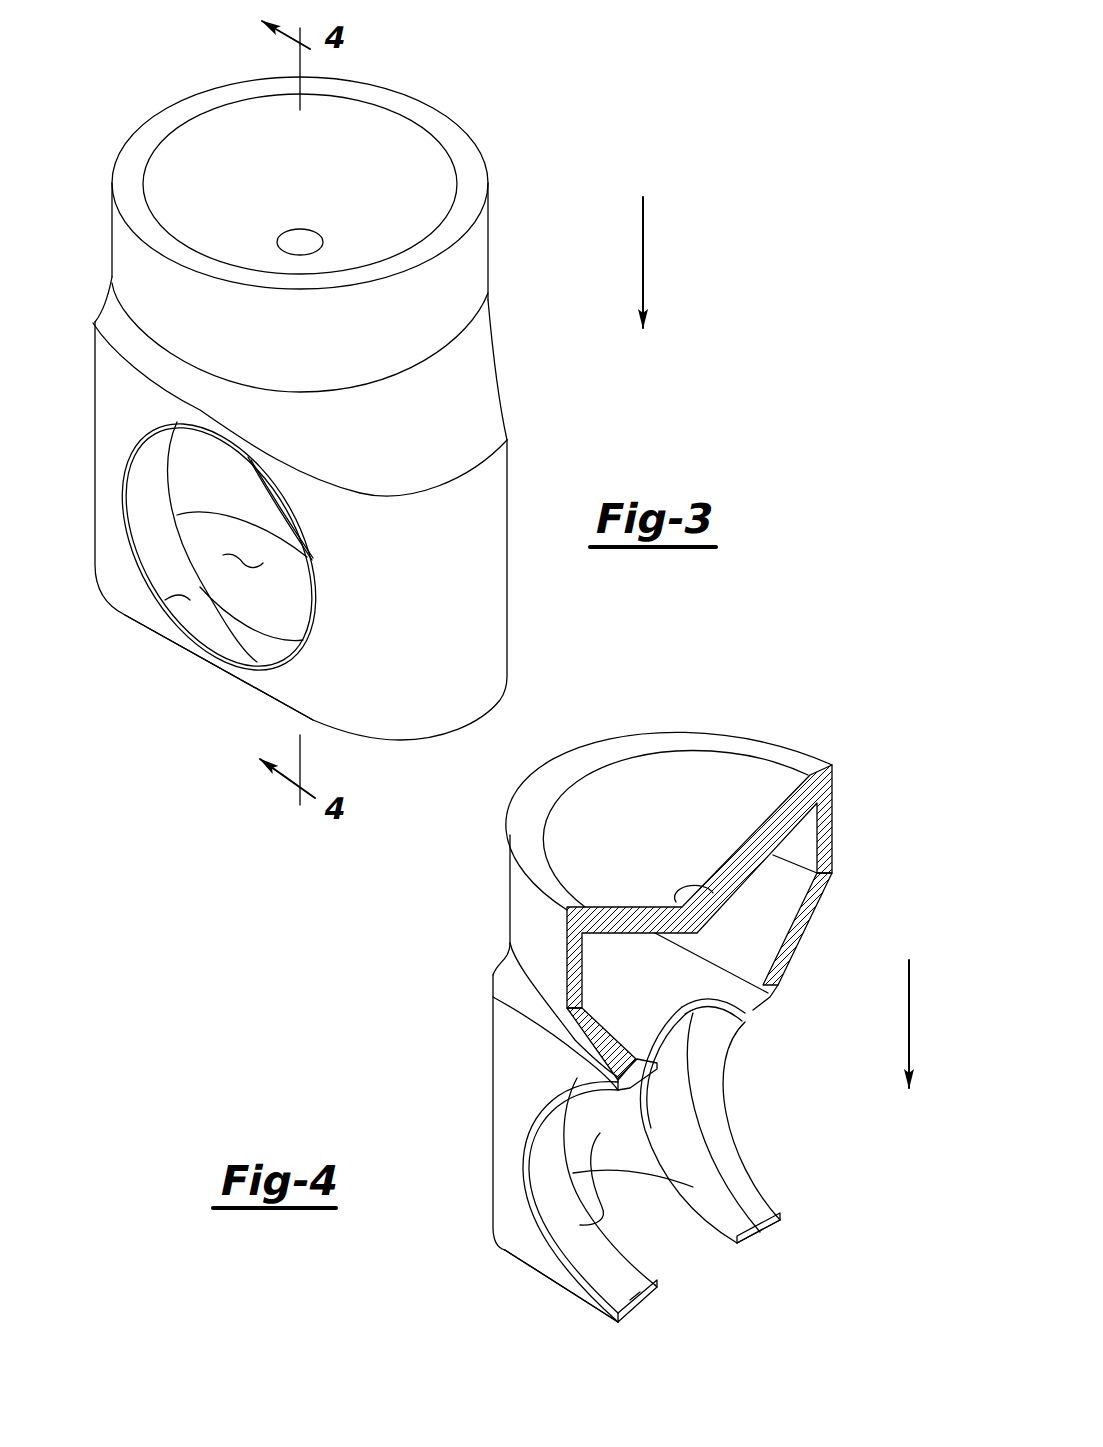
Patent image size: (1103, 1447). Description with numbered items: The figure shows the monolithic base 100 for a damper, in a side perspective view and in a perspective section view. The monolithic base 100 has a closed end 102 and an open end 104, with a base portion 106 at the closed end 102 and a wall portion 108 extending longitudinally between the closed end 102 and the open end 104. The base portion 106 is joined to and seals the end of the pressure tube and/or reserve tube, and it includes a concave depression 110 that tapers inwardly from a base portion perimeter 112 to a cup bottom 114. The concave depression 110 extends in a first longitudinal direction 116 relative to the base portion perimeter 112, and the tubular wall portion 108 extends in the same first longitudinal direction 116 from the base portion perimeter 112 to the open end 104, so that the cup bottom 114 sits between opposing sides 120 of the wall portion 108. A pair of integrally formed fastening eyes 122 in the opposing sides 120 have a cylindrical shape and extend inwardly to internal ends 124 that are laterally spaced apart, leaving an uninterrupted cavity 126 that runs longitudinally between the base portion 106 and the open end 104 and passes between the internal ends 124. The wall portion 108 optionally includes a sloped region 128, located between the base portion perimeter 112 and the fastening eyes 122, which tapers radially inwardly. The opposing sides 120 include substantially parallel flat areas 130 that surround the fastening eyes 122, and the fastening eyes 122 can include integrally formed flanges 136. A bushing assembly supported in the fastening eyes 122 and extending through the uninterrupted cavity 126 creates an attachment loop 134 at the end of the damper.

In FIG. 3, the monolithic base 100 is at (547, 166).
In FIG. 4, the monolithic base 100 is at (854, 766).
In FIG. 3, the closed end 102 is at (131, 119).
In FIG. 4, the closed end 102 is at (521, 806).
In FIG. 3, the open end 104 is at (172, 644).
In FIG. 4, the open end 104 is at (733, 1268).
In FIG. 3, the base portion 106 is at (488, 272).
In FIG. 4, the base portion 106 is at (825, 835).
In FIG. 3, the wall portion 108 is at (506, 598).
In FIG. 4, the wall portion 108 is at (492, 1089).
In FIG. 3, the concave depression 110 is at (397, 165).
In FIG. 4, the concave depression 110 is at (758, 790).
In FIG. 3, the base portion perimeter 112 is at (158, 271).
In FIG. 4, the base portion perimeter 112 is at (535, 907).
In FIG. 3, the cup bottom 114 is at (298, 243).
In FIG. 4, the cup bottom 114 is at (690, 898).
In FIG. 3, the first longitudinal direction 116 is at (643, 265).
In FIG. 4, the first longitudinal direction 116 is at (909, 1025).
In FIG. 3, the opposing sides 120 is at (210, 465).
In FIG. 4, the opposing sides 120 is at (782, 1237).
In FIG. 3, the integrally formed fastening eyes 122 is at (314, 560).
In FIG. 4, the integrally formed fastening eyes 122 is at (696, 1096).
In FIG. 4, the internal ends 124 is at (624, 1253).
In FIG. 4, the uninterrupted cavity 126 is at (615, 990).
In FIG. 3, the sloped region 128 is at (437, 417).
In FIG. 4, the sloped region 128 is at (800, 922).
In FIG. 3, the flat areas 130 is at (320, 680).
In FIG. 4, the flat areas 130 is at (560, 1273).
In FIG. 3, the attachment loop 134 is at (240, 562).
In FIG. 3, the integrally formed flanges 136 is at (193, 607).
In FIG. 4, the integrally formed flanges 136 is at (699, 1173).